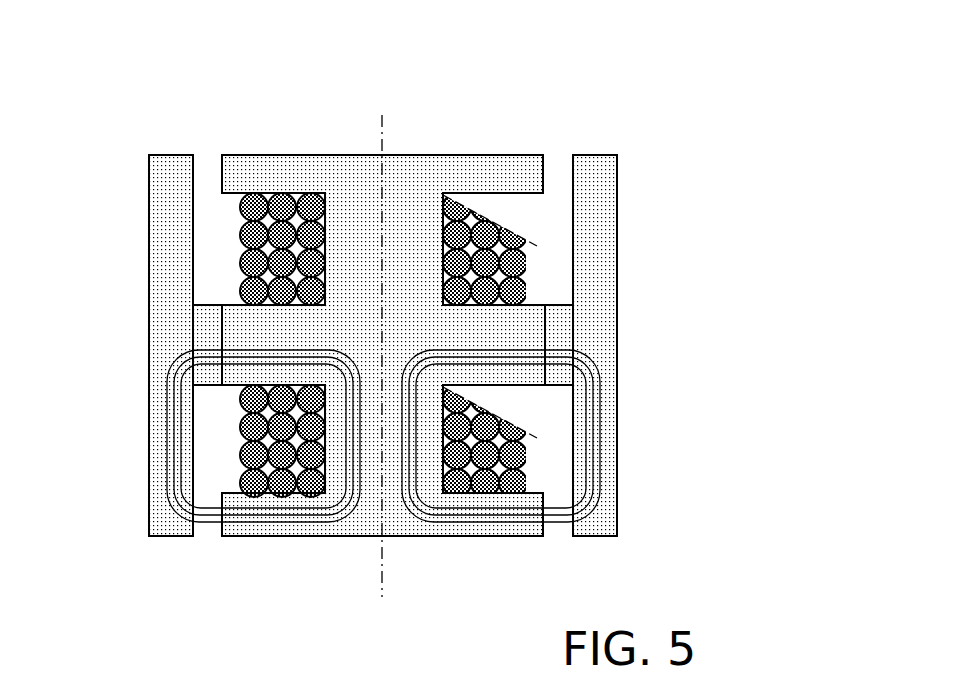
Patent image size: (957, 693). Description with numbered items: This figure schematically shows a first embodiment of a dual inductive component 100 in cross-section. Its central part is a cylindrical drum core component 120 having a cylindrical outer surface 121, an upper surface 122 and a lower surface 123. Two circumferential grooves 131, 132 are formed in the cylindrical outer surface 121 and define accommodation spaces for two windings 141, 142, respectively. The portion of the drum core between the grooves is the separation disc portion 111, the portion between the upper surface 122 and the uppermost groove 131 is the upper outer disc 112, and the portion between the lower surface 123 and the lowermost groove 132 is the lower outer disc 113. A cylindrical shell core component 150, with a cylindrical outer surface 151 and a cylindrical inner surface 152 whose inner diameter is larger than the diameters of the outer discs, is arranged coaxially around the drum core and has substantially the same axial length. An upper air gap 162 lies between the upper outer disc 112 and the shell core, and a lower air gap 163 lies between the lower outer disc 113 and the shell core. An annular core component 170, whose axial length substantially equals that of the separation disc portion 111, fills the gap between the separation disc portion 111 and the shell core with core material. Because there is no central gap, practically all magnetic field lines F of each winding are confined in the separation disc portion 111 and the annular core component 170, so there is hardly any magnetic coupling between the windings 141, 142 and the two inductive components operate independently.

The dual inductive component 100 is at (730, 83).
The separation disc portion 111 is at (254, 331).
The upper outer disc 112 is at (508, 172).
The lower outer disc 113 is at (490, 528).
The cylindrical drum core component 120 is at (287, 539).
The cylindrical outer surface 121 is at (545, 166).
The upper surface 122 is at (435, 155).
The lower surface 123 is at (425, 537).
The groove 131 is at (518, 214).
The groove 132 is at (511, 399).
The winding 141 is at (483, 264).
The winding 142 is at (485, 451).
The cylindrical shell core component 150 is at (163, 539).
The cylindrical outer surface 151 is at (150, 212).
The cylindrical inner surface 152 is at (193, 214).
The upper air gap 162 is at (208, 173).
The lower air gap 163 is at (208, 530).
The annular core component 170 is at (560, 327).
The magnetic field lines F is at (158, 444).